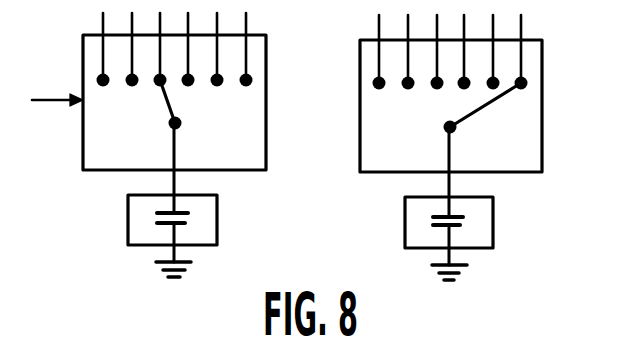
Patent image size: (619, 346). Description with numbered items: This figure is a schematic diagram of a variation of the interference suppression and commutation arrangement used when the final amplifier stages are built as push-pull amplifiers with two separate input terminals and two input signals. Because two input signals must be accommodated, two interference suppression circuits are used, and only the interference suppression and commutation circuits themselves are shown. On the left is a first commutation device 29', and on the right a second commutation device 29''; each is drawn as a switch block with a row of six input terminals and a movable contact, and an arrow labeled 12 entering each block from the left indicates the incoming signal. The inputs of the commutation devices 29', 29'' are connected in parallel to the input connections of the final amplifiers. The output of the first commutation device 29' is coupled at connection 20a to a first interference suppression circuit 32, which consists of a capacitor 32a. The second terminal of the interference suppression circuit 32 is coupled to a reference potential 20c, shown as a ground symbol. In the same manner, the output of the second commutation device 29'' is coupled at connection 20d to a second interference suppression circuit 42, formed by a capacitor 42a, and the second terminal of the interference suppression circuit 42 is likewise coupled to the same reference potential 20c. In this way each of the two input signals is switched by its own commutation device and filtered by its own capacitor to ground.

The input signal 12 is at (57, 89).
The first commutation device 29' is at (165, 105).
The second commutation device 29'' is at (441, 109).
The first interference suppression circuit 32 is at (128, 207).
The capacitor 32a is at (187, 224).
The second interference suppression circuit 42 is at (405, 210).
The capacitor 42a is at (462, 227).
The connection 20a is at (176, 178).
The reference potential 20c is at (177, 253).
The connection 20d is at (451, 182).